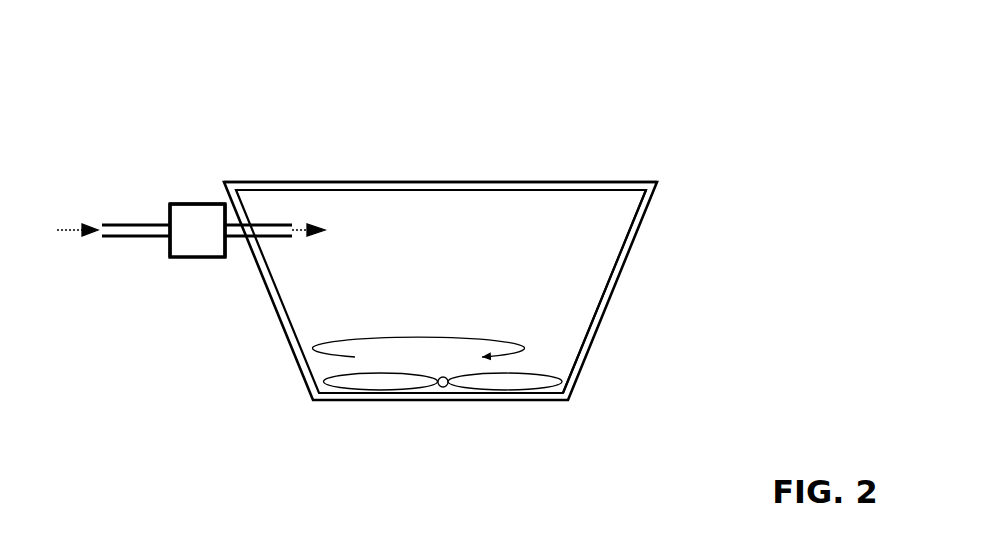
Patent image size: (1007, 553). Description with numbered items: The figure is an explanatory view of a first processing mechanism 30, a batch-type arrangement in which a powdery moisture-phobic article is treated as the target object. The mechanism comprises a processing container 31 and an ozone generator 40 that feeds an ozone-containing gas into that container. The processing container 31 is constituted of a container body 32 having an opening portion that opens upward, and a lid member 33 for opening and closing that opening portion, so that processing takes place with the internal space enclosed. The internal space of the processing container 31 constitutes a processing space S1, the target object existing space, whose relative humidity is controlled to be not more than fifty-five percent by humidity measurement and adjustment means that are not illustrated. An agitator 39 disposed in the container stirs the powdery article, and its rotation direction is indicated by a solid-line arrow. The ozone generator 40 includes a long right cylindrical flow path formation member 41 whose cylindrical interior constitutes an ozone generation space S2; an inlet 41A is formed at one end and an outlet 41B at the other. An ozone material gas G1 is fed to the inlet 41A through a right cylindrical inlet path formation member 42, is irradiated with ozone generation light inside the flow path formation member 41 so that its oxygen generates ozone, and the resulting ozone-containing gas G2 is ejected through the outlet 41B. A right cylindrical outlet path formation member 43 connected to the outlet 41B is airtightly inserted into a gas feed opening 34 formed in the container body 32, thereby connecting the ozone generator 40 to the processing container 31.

The first processing mechanism 30 is at (175, 88).
The processing container 31 is at (631, 265).
The container body 32 is at (600, 312).
The lid member 33 is at (455, 181).
The gas feed opening 34 is at (253, 222).
The agitator 39 is at (517, 383).
The ozone generator 40 is at (192, 202).
The flow path formation member 41 is at (197, 258).
The inlet 41A is at (172, 258).
The outlet 41B is at (219, 258).
The inlet path formation member 42 is at (125, 238).
The outlet path formation member 43 is at (238, 238).
The ozone material gas G1 is at (63, 223).
The ozone-containing gas G2 is at (297, 225).
The processing space S1 is at (553, 233).
The ozone generation space S2 is at (183, 218).